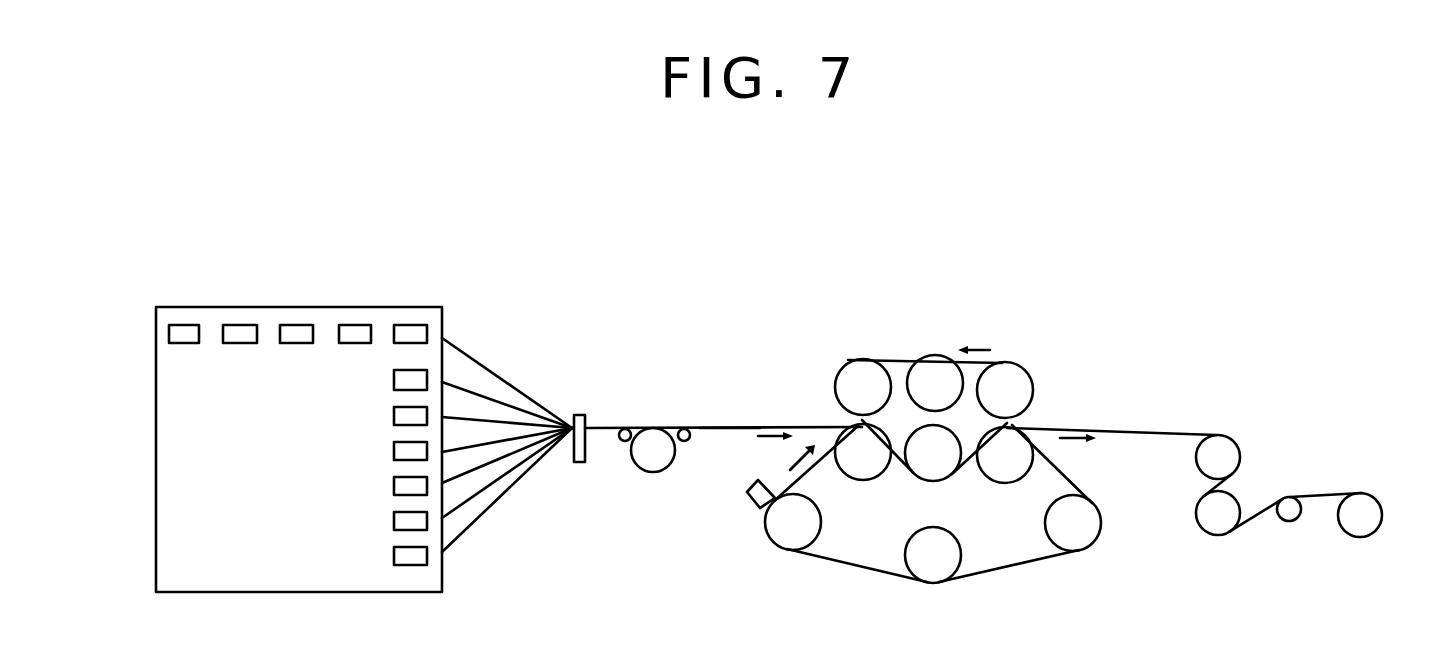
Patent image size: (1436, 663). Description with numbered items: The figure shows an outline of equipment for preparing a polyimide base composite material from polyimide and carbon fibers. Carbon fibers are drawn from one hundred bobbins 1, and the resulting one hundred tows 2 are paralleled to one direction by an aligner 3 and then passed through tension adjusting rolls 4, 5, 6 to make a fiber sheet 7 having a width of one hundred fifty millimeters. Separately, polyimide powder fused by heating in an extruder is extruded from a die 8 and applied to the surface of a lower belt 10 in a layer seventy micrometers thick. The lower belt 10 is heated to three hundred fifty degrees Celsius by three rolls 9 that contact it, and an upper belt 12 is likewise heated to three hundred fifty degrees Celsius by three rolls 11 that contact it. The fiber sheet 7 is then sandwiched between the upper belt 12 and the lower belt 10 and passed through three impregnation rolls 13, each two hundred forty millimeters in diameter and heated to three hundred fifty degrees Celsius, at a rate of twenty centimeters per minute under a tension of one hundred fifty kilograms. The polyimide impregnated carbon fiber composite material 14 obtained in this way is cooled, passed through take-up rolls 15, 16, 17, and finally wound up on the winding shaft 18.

The bobbins 1 is at (362, 325).
The tows 2 is at (497, 372).
The aligner 3 is at (581, 414).
The tension adjusting roll 4 is at (623, 428).
The tension adjusting roll 5 is at (644, 467).
The tension adjusting roll 6 is at (682, 429).
The fiber sheet 7 is at (775, 428).
The die 8 is at (753, 503).
The rolls 9 is at (786, 543).
The lower belt 10 is at (857, 566).
The rolls 11 is at (857, 370).
The upper belt 12 is at (900, 360).
The impregnation rolls 13 is at (872, 468).
The polyimide impregnated carbon fiber composite material 14 is at (1111, 412).
The take-up roll 15 is at (1222, 440).
The take-up roll 16 is at (1208, 525).
The take-up roll 17 is at (1288, 519).
The winding shaft 18 is at (1365, 528).